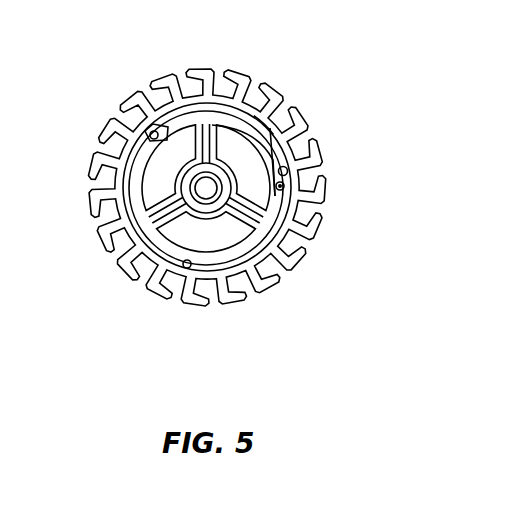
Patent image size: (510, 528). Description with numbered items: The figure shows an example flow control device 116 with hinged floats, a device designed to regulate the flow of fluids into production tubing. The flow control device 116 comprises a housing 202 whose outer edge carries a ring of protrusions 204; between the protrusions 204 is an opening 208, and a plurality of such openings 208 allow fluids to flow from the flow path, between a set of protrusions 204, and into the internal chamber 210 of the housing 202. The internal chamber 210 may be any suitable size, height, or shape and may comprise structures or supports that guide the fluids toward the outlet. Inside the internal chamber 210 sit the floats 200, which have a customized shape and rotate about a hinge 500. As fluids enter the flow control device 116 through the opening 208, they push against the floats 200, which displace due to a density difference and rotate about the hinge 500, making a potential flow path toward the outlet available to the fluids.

The flow control device 116 is at (88, 264).
The floats 200 is at (237, 237).
The housing 202 is at (118, 119).
The protrusions 204 is at (264, 137).
The opening 208 is at (158, 110).
The internal chamber 210 is at (285, 116).
The hinge 500 is at (279, 190).